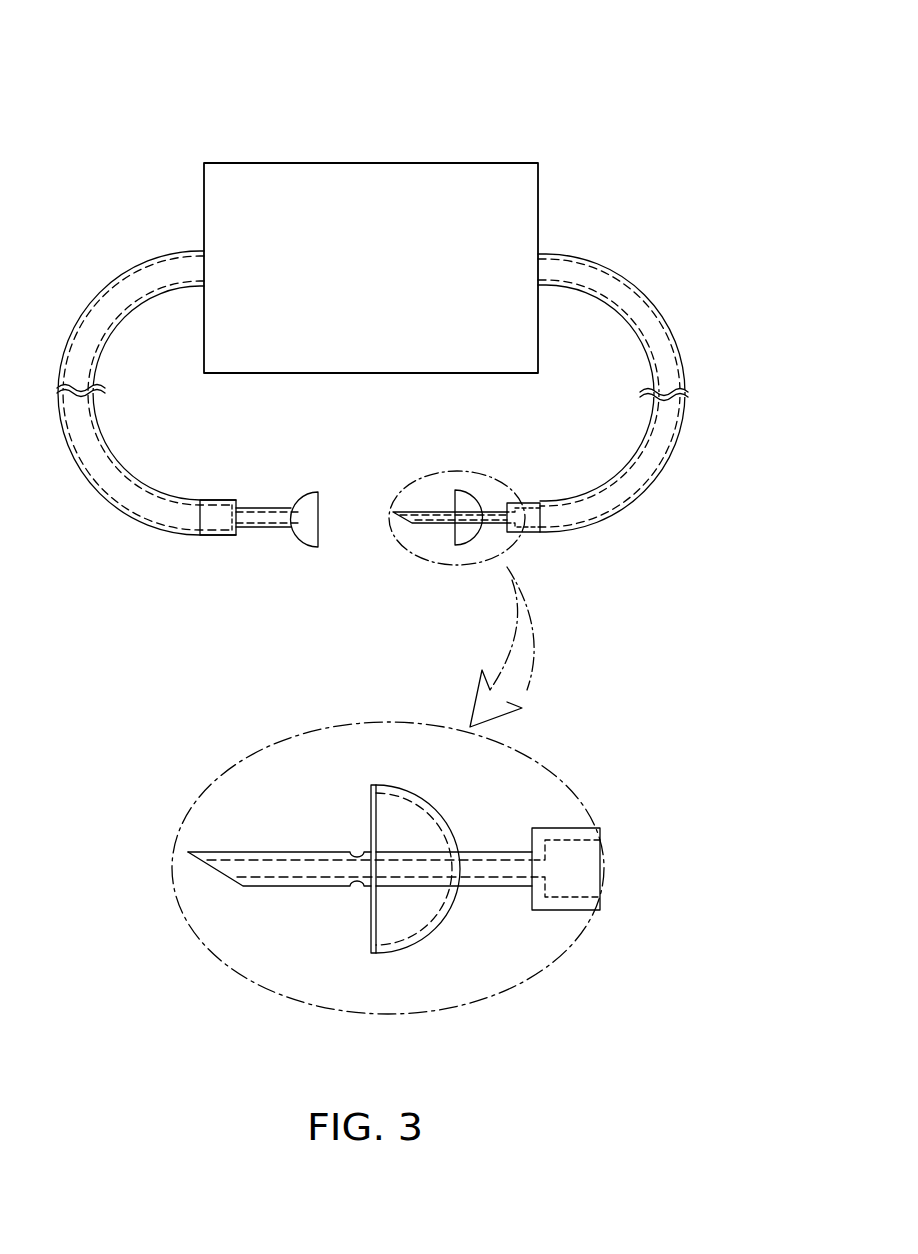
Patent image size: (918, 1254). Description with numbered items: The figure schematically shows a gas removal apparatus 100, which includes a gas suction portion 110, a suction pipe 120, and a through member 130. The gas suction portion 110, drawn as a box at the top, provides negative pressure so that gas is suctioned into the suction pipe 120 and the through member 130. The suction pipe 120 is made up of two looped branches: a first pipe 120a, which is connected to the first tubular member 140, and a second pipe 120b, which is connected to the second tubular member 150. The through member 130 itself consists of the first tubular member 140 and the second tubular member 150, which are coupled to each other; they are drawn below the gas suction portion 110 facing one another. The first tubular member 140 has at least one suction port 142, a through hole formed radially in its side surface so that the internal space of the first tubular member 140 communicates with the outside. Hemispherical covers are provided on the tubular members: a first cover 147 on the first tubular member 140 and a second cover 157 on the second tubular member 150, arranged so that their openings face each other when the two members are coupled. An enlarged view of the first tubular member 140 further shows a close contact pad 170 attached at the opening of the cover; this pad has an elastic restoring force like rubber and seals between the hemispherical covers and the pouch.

The gas removal apparatus 100 is at (267, 54).
The gas suction portion 110 is at (438, 363).
The suction pipe 120 is at (596, 112).
The first pipe 120a is at (608, 269).
The second pipe 120b is at (134, 250).
The through member 130 is at (445, 621).
The first tubular member 140 is at (457, 529).
The suction port 142 is at (358, 856).
The first cover 147 is at (463, 490).
The second tubular member 150 is at (289, 529).
The second cover 157 is at (310, 490).
The close contact pad 170 is at (371, 945).